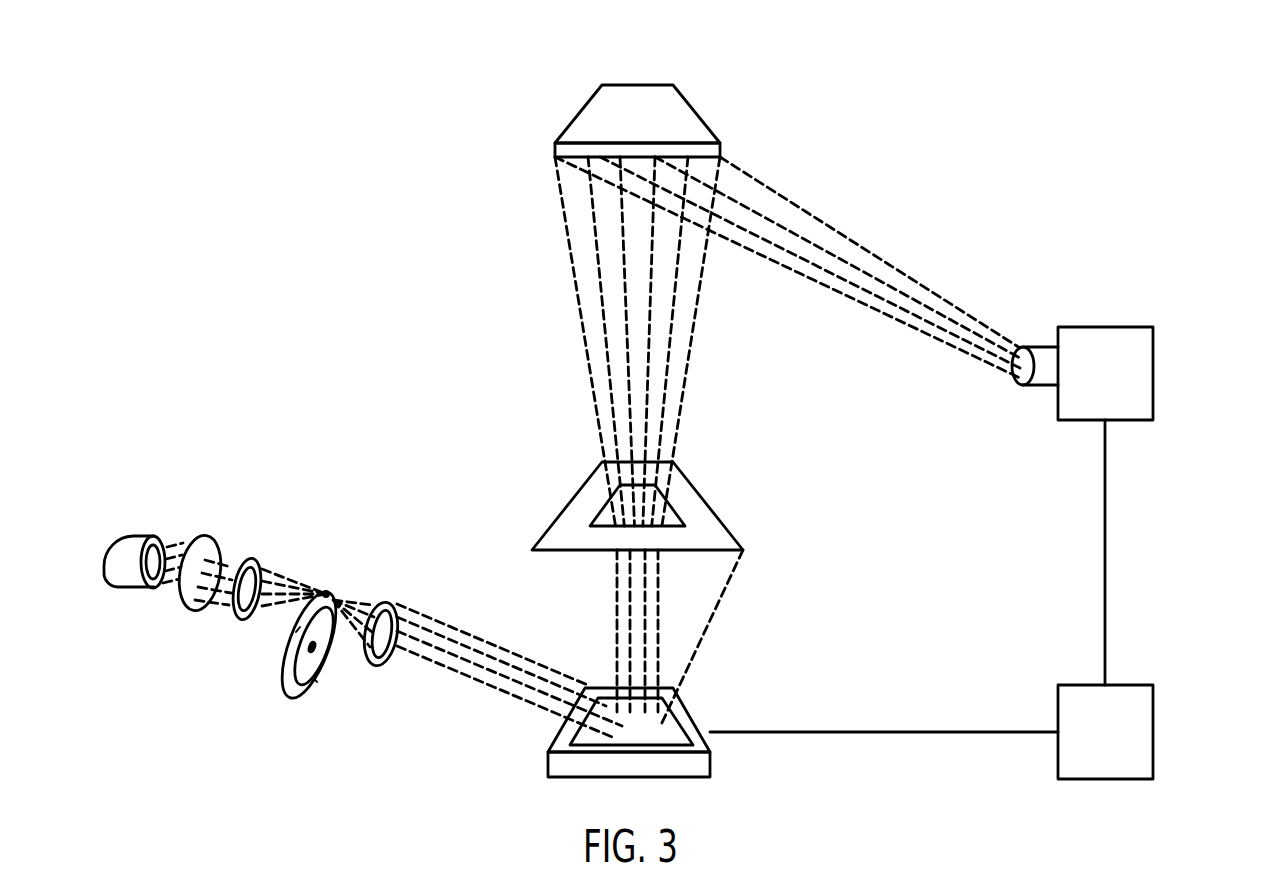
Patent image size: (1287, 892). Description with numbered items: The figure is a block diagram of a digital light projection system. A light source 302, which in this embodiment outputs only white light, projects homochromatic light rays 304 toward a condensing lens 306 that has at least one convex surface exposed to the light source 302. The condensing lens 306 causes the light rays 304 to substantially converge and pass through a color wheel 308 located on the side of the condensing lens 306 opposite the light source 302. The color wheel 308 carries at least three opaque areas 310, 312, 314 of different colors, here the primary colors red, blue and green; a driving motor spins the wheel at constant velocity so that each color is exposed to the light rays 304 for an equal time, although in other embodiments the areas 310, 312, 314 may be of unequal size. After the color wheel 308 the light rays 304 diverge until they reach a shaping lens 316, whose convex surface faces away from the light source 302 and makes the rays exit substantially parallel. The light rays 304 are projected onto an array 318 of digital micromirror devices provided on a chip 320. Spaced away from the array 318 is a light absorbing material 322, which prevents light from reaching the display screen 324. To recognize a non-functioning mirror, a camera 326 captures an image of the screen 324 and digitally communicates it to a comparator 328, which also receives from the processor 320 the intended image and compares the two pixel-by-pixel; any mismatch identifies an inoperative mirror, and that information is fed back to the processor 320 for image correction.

The light source 302 is at (126, 575).
The light rays 304 is at (184, 608).
The condensing lens 306 is at (253, 558).
The color wheel 308 is at (322, 572).
The opaque area 310 is at (314, 678).
The opaque area 312 is at (289, 662).
The opaque area 314 is at (333, 591).
The shaping lens 316 is at (386, 664).
The array of DMDs 318 is at (660, 741).
The chip 320 is at (712, 760).
The light absorbing material 322 is at (583, 502).
The display screen 324 is at (698, 115).
The camera 326 is at (1153, 373).
The comparator 328 is at (1153, 732).